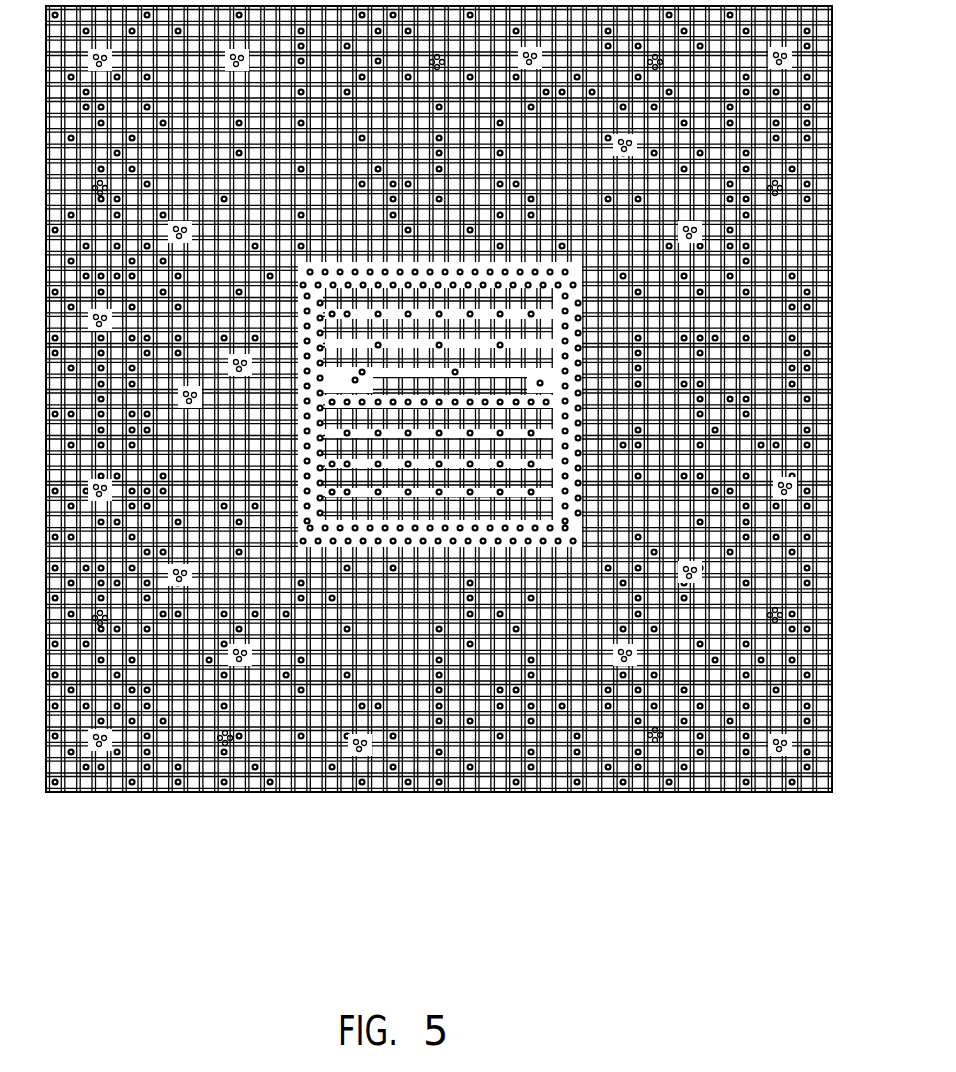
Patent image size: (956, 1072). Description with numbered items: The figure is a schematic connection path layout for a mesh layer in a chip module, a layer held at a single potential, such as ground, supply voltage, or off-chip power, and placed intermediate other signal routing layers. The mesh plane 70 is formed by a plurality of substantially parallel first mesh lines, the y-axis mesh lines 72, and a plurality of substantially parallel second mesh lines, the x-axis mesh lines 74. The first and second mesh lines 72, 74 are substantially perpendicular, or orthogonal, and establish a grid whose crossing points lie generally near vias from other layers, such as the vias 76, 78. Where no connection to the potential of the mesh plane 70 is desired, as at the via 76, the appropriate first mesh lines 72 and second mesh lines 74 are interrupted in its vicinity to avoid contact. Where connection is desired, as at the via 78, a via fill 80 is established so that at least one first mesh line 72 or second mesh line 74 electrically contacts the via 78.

The mesh plane 70 is at (680, 840).
The y-axis mesh lines 72 is at (415, 794).
The x-axis mesh lines 74 is at (833, 537).
The via 76 is at (787, 487).
The via 78 is at (777, 616).
The via fill 80 is at (777, 613).